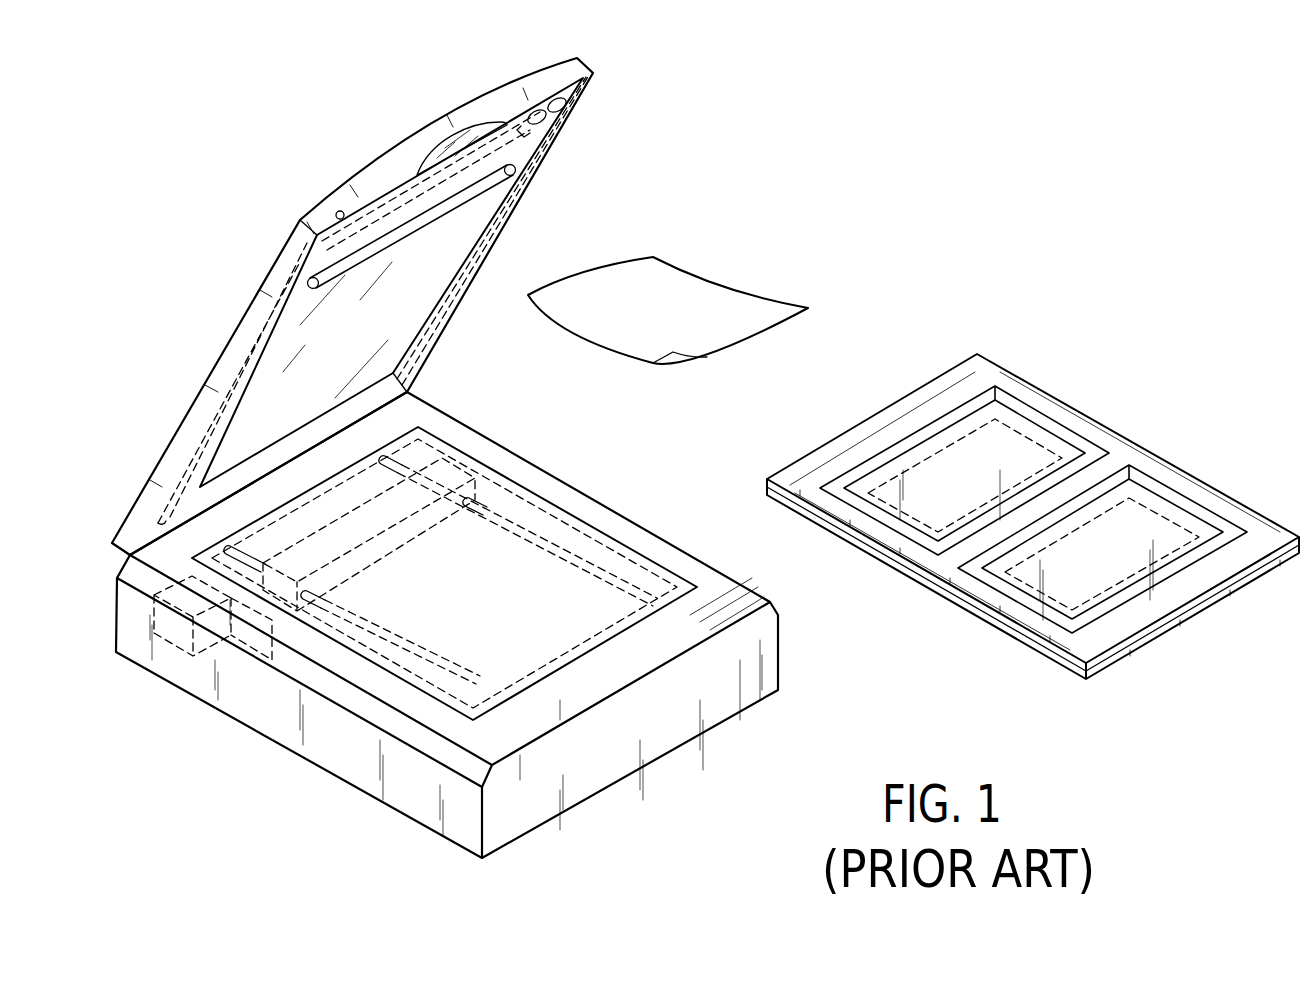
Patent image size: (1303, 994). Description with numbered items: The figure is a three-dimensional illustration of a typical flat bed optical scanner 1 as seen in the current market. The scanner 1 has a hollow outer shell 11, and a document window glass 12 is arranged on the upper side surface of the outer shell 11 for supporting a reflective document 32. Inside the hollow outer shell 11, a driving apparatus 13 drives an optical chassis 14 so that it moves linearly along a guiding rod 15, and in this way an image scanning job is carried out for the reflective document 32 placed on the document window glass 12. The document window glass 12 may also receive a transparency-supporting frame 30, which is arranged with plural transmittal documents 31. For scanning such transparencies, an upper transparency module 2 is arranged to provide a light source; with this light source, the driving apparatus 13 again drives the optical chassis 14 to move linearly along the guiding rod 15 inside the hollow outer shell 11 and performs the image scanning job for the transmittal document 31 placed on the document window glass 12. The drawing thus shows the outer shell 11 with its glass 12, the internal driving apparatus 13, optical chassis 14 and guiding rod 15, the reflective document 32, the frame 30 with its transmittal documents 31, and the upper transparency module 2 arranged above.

The scanner 1 is at (464, 443).
The upper transparency module 2 is at (371, 208).
The outer shell 11 is at (728, 598).
The document window glass 12 is at (565, 508).
The driving apparatus 13 is at (175, 630).
The optical chassis 14 is at (455, 460).
The guiding rod 15 is at (557, 550).
The transparency-supporting frame 30 is at (1033, 486).
The transmittal documents 31 is at (1021, 425).
The reflective document 32 is at (668, 275).